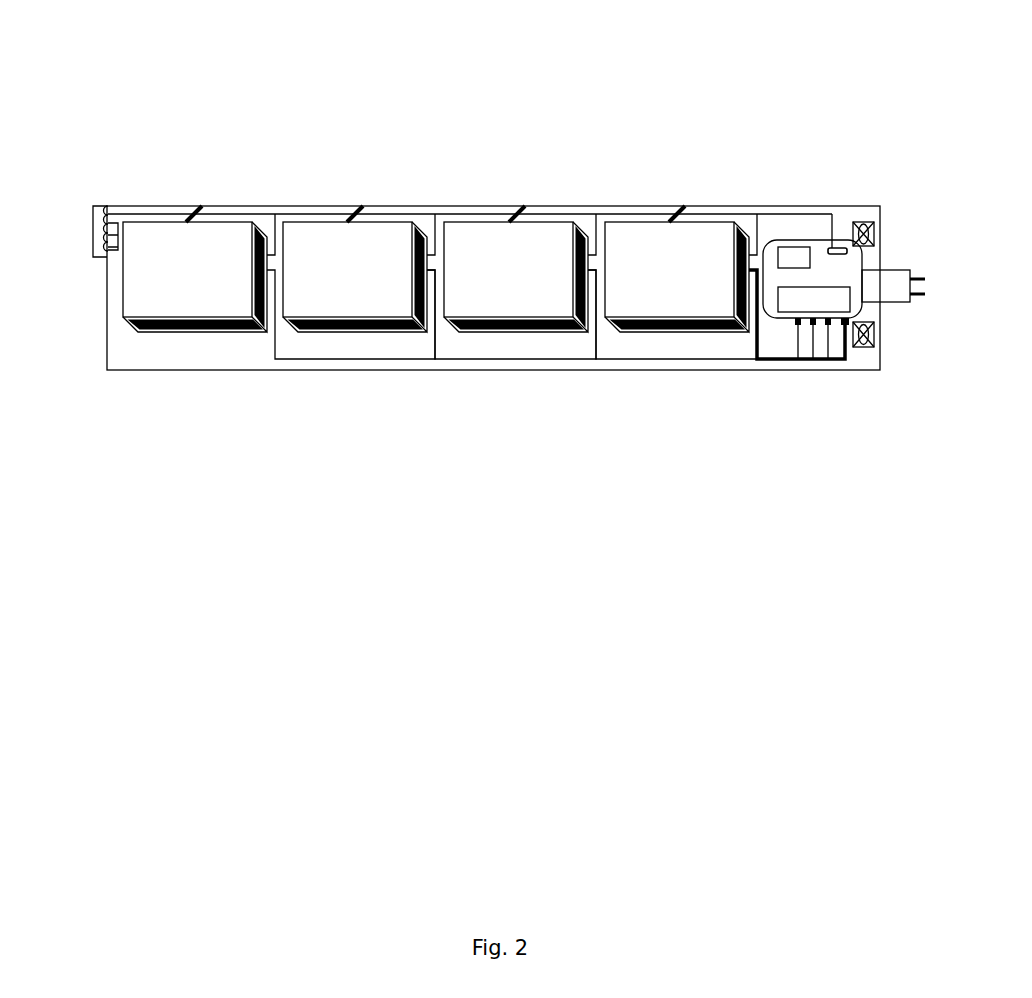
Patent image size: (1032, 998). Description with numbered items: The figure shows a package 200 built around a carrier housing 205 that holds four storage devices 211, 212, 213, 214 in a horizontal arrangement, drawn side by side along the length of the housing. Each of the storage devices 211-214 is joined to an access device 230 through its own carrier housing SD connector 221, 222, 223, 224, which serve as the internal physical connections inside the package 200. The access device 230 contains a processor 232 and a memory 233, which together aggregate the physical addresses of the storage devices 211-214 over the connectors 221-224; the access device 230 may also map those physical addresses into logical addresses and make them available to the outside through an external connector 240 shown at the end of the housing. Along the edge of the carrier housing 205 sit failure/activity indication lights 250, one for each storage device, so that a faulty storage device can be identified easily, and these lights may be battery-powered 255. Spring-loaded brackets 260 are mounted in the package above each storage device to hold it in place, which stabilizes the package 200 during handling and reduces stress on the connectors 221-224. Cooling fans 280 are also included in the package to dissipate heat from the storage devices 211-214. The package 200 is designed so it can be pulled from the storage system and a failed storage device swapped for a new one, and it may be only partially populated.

The package 200 is at (492, 150).
The carrier housing 205 is at (173, 204).
The failure/activity indication lights 250 is at (92, 233).
The spring-loaded brackets 260 is at (514, 213).
The storage device 211 is at (195, 277).
The storage device 212 is at (355, 277).
The storage device 213 is at (516, 277).
The storage device 214 is at (677, 277).
The carrier housing SD connector 221 is at (273, 341).
The carrier housing SD connector 222 is at (434, 341).
The carrier housing SD connector 223 is at (595, 341).
The carrier housing SD connector 224 is at (756, 341).
The access device 230 is at (812, 299).
The processor 232 is at (843, 298).
The memory 233 is at (790, 260).
The battery power 255 is at (838, 248).
The cooling fans 280 is at (862, 222).
The external connector 240 is at (893, 286).